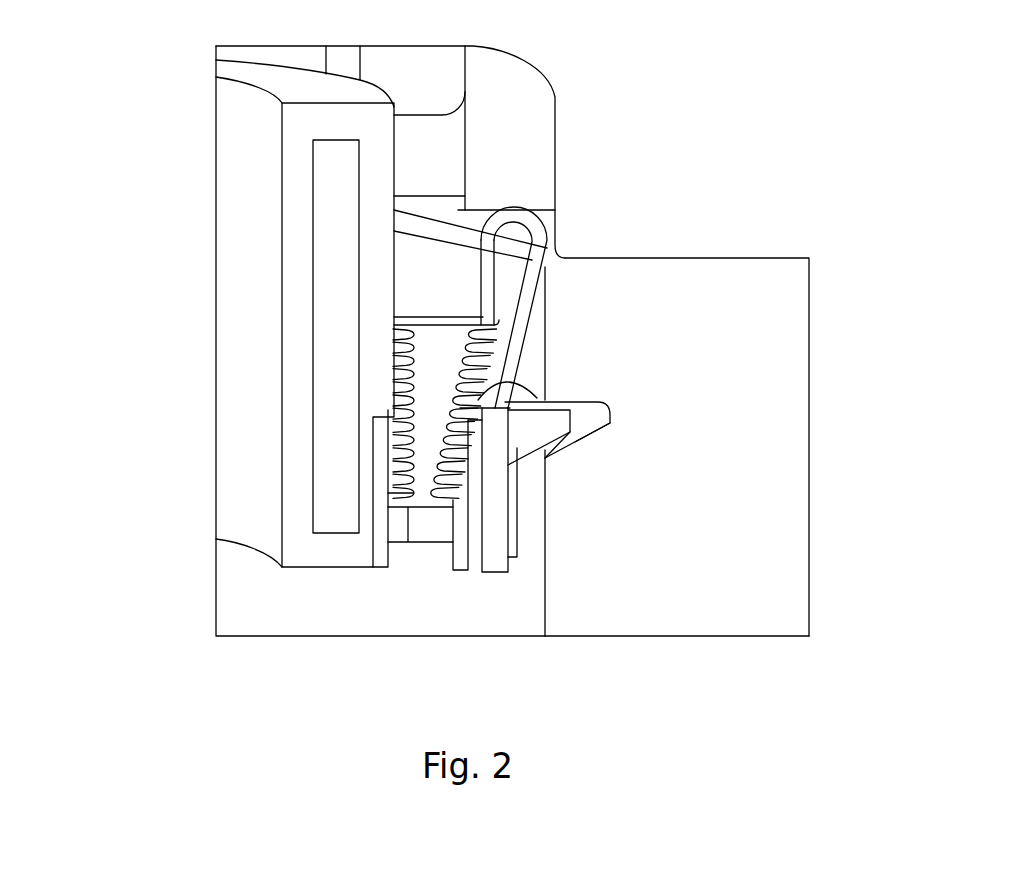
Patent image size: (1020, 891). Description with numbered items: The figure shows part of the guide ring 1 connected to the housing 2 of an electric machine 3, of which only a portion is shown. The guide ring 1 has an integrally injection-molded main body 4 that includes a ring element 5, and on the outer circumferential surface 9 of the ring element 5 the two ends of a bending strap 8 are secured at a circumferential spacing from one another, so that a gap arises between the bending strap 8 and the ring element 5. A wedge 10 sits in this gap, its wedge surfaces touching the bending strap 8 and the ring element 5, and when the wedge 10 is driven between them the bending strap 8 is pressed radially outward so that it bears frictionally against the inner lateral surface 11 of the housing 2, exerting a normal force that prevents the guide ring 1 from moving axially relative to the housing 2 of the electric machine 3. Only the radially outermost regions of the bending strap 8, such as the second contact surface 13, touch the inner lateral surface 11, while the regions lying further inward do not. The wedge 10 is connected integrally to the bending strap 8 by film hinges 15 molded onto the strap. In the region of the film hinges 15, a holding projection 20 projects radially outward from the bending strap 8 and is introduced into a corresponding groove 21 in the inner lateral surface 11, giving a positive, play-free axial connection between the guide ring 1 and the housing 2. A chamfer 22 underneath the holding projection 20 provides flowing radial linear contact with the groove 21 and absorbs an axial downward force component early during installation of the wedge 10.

The guide ring 1 is at (166, 148).
The housing 2 is at (768, 360).
The electric machine 3 is at (728, 116).
The main body 4 is at (196, 105).
The ring element 5 is at (297, 338).
The bending strap 8 is at (490, 533).
The outer circumferential surface 9 is at (398, 160).
The wedge 10 is at (433, 367).
The inner lateral surface 11 is at (420, 273).
The second contact surface 13 is at (513, 497).
The film hinge 15 is at (547, 249).
The holding projection 20 is at (560, 449).
The groove 21 is at (583, 410).
The chamfer 22 is at (530, 455).